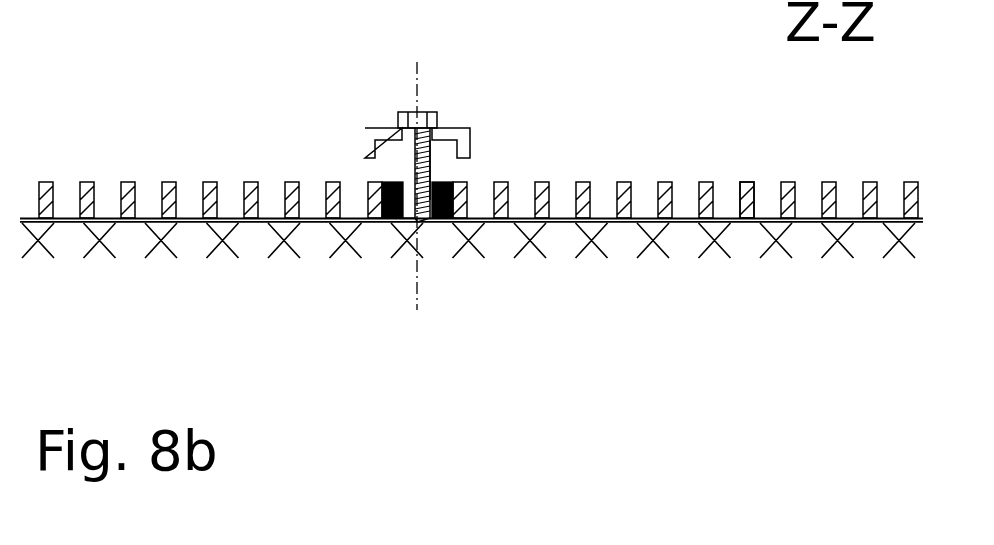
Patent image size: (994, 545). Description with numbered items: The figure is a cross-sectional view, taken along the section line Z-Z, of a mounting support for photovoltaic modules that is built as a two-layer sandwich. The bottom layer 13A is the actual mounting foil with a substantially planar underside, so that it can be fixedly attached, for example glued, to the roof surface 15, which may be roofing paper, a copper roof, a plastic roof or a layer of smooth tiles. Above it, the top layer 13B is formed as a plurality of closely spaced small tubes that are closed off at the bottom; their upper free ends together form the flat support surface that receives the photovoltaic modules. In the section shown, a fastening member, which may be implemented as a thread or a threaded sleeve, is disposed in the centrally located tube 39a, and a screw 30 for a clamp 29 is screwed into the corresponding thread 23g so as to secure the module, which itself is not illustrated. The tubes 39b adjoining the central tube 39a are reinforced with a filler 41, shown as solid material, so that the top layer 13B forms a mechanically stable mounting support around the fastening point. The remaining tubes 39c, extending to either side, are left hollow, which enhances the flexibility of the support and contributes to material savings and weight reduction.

The roof surface 15 is at (73, 237).
The bottom layer 13A is at (135, 221).
The top layer 13B is at (138, 163).
The clamp 29 is at (367, 130).
The screw 30 is at (423, 112).
The central tube 39a is at (414, 183).
The thread 23g is at (432, 170).
The adjoining tubes 39b is at (418, 221).
The remaining tubes 39c is at (742, 206).
The filler 41 is at (416, 221).